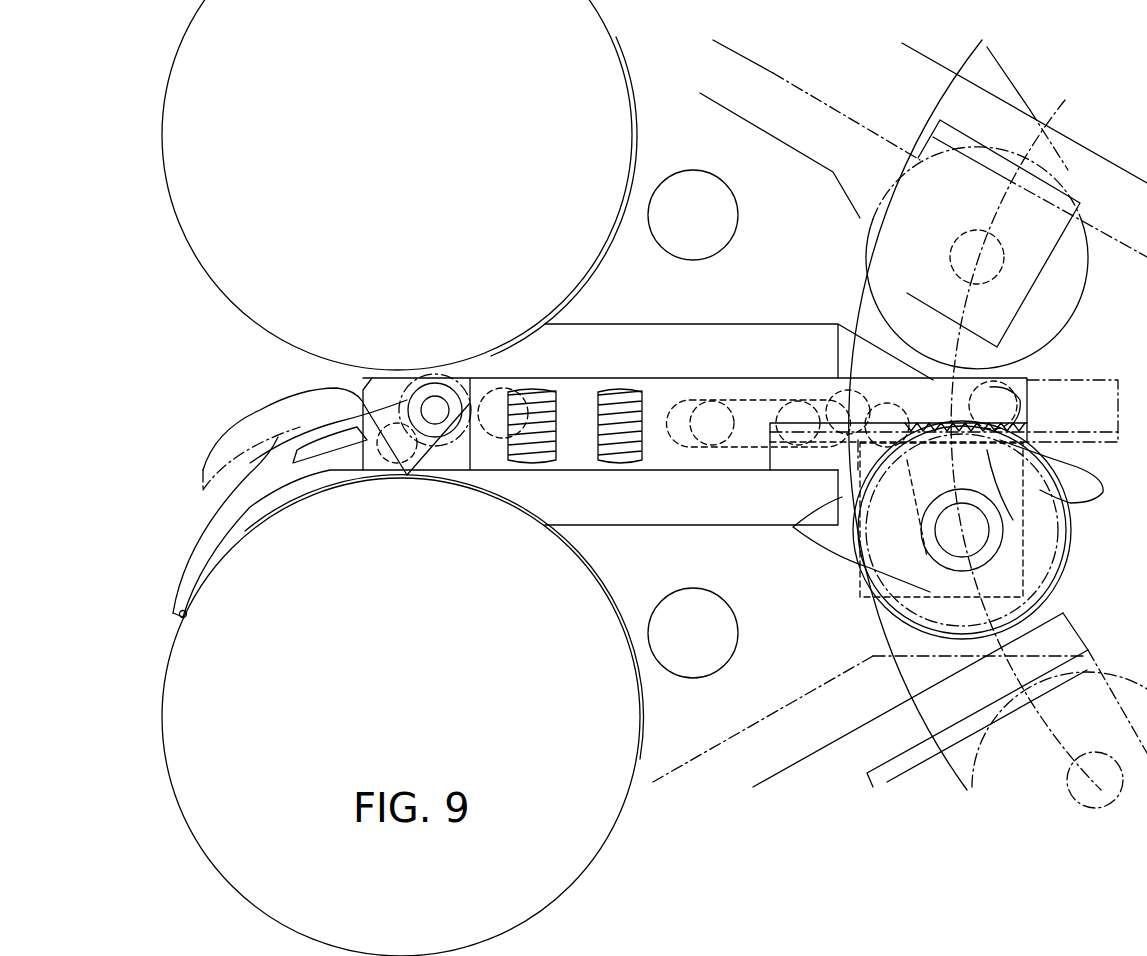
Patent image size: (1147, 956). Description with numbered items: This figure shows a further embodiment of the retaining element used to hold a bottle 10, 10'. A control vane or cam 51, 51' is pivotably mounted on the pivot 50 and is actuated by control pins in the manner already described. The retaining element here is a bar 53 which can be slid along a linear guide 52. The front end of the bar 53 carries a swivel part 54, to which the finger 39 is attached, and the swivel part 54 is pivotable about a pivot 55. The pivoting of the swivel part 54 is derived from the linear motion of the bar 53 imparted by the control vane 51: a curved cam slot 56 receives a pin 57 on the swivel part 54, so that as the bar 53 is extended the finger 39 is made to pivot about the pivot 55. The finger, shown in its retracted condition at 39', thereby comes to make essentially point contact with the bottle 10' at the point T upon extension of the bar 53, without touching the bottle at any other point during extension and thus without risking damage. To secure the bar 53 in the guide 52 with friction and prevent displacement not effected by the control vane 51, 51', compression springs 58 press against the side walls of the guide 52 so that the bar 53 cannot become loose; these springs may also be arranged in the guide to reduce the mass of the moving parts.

The bottle 10 is at (399, 185).
The bottle 10' is at (403, 715).
The finger 39 is at (259, 527).
The finger in retracted condition 39' is at (305, 432).
The pivot 50 is at (952, 548).
The control vane 51 is at (858, 526).
The cam 51' is at (1066, 453).
The linear guide 52 is at (724, 326).
The bar 53 is at (670, 393).
The swivel part 54 is at (336, 374).
The pivot 55 is at (437, 374).
The curved cam slot 56 is at (412, 473).
The pin 57 is at (396, 374).
The compression springs 58 is at (610, 393).
The point of contact T is at (187, 614).